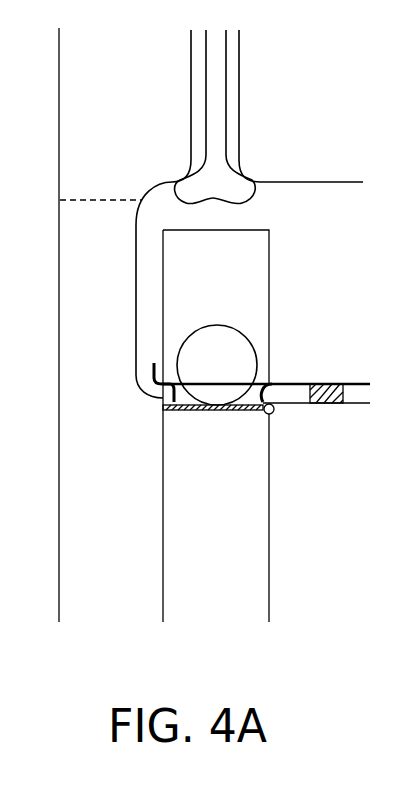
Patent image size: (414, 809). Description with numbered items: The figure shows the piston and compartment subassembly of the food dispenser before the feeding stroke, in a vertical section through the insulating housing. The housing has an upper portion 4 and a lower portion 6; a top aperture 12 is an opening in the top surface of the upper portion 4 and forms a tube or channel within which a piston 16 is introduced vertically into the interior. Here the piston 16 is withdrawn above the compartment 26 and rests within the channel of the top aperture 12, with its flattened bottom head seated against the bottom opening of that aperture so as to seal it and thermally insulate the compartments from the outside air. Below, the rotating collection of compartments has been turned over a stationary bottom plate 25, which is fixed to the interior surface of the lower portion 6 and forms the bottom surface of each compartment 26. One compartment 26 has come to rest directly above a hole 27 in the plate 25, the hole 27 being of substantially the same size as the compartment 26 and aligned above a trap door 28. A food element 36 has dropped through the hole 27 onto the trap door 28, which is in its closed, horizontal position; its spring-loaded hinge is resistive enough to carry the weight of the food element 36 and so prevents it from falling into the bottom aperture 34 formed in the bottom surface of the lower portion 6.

The upper portion 4 is at (75, 159).
The lower portion 6 is at (75, 478).
The top aperture 12 is at (232, 80).
The piston 16 is at (217, 135).
The compartment 26 is at (240, 250).
The food element 36 is at (238, 350).
The bottom plate 25 is at (293, 384).
The hole 27 is at (165, 390).
The trap door 28 is at (218, 412).
The bottom aperture 34 is at (220, 570).